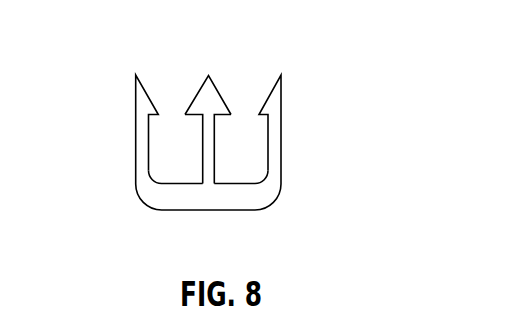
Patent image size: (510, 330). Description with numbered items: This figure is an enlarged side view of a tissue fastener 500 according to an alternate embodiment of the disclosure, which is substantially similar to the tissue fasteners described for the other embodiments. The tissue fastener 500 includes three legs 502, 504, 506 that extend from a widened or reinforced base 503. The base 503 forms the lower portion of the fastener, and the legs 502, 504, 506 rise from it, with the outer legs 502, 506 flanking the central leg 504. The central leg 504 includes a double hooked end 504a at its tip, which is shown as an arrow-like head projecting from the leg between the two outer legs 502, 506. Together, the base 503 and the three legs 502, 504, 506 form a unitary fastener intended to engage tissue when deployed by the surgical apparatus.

The tissue fastener 500 is at (242, 144).
The leg 502 is at (142, 140).
The widened or reinforced base 503 is at (202, 210).
The central leg 504 is at (268, 114).
The double hooked end 504a is at (212, 85).
The leg 506 is at (331, 79).